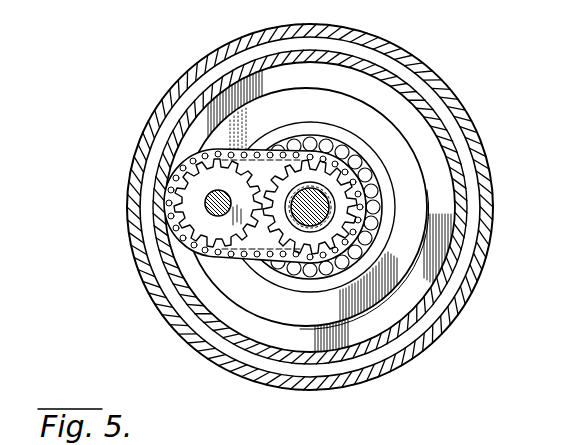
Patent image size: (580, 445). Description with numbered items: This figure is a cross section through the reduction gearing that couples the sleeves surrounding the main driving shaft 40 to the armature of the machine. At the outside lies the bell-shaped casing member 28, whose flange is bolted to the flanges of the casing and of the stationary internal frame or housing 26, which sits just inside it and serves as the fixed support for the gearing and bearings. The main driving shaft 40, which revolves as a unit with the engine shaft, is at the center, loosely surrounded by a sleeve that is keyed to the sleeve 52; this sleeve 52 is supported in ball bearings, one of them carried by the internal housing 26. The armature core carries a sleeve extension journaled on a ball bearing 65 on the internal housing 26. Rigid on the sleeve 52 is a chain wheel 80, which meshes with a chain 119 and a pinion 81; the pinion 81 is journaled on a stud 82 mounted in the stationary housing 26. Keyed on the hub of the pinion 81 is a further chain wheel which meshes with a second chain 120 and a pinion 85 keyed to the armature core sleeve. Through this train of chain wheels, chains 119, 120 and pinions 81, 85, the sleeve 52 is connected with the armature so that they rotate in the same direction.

The casing member 28 is at (155, 112).
The stationary internal frame or housing 26 is at (470, 347).
The sleeve 52 is at (362, 160).
The main driving shaft 40 is at (373, 206).
The chain 120 is at (322, 148).
The ball bearing 65 is at (372, 240).
The chain 119 is at (196, 252).
The pinion 85 is at (242, 257).
The pinion 81 is at (176, 221).
The chain wheel 80 is at (253, 262).
The stud 82 is at (227, 211).